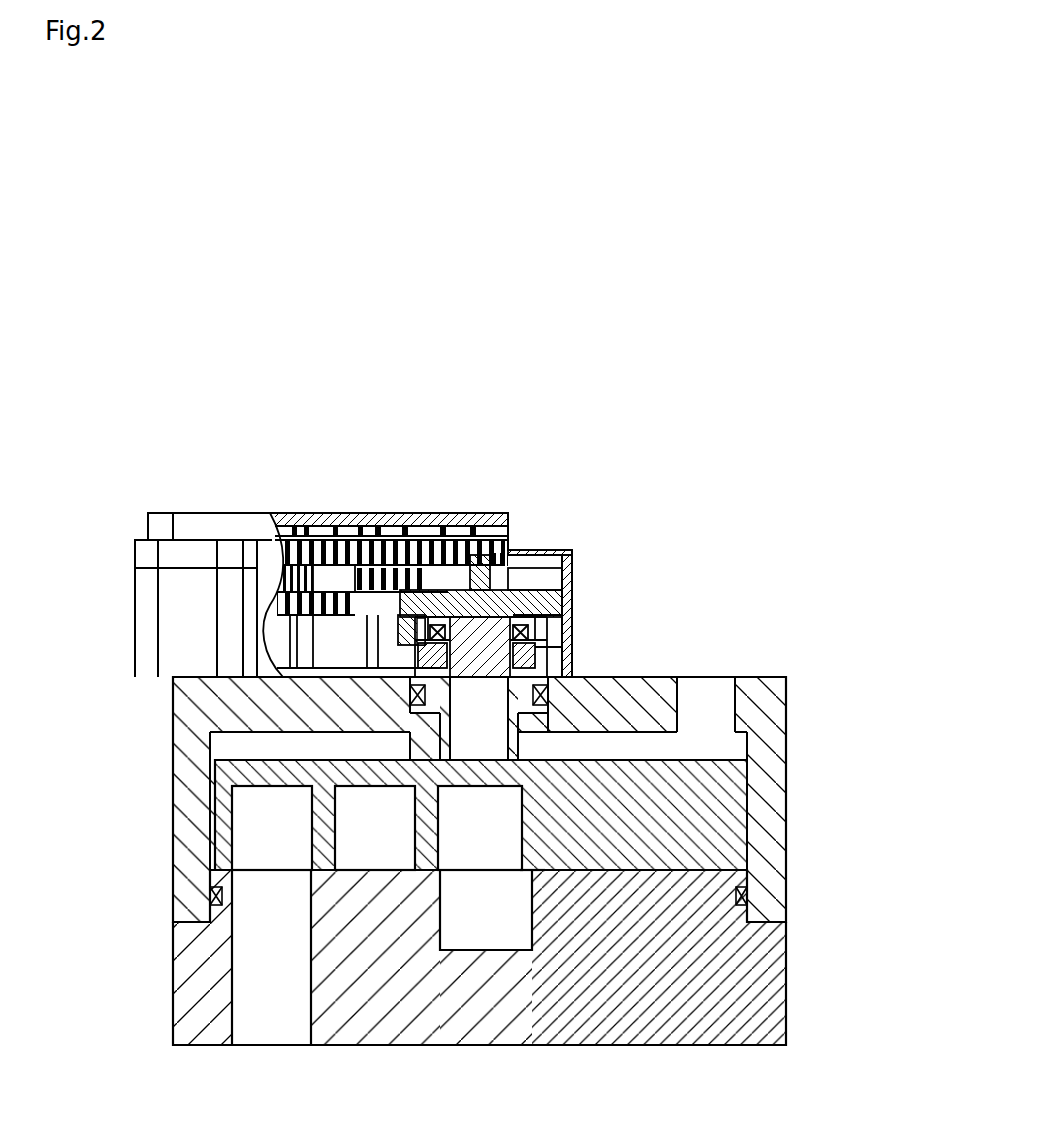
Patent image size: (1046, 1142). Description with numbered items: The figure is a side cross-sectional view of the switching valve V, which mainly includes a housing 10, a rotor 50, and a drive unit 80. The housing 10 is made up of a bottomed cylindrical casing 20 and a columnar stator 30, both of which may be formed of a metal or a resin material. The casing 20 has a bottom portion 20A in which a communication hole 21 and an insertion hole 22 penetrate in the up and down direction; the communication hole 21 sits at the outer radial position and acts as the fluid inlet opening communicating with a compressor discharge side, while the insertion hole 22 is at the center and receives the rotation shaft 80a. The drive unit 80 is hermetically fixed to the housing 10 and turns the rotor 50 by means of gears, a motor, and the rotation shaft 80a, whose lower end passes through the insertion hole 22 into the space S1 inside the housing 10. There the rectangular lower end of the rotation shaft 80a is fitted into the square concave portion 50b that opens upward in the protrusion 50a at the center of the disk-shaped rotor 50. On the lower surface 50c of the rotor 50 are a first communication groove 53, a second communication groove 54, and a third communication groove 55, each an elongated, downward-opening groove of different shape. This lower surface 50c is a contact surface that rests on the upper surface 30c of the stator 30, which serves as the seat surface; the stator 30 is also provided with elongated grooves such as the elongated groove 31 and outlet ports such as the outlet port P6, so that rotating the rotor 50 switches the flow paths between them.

The switching valve V is at (178, 407).
The housing 10 is at (905, 845).
The casing 20 is at (778, 772).
The bottom portion 20A is at (227, 682).
The communication hole 21 is at (733, 702).
The insertion hole 22 is at (540, 668).
The stator 30 is at (762, 1022).
The upper surface 30c is at (615, 868).
The elongated groove 31 is at (532, 872).
The rotor 50 is at (240, 758).
The protrusion 50a is at (398, 660).
The concave portion 50b is at (478, 690).
The lower surface 50c is at (637, 870).
The first communication groove 53 is at (440, 827).
The second communication groove 54 is at (258, 808).
The third communication groove 55 is at (352, 832).
The drive unit 80 is at (540, 531).
The rotation shaft 80a is at (574, 593).
The space S1 is at (735, 745).
The outlet port P6 is at (260, 972).